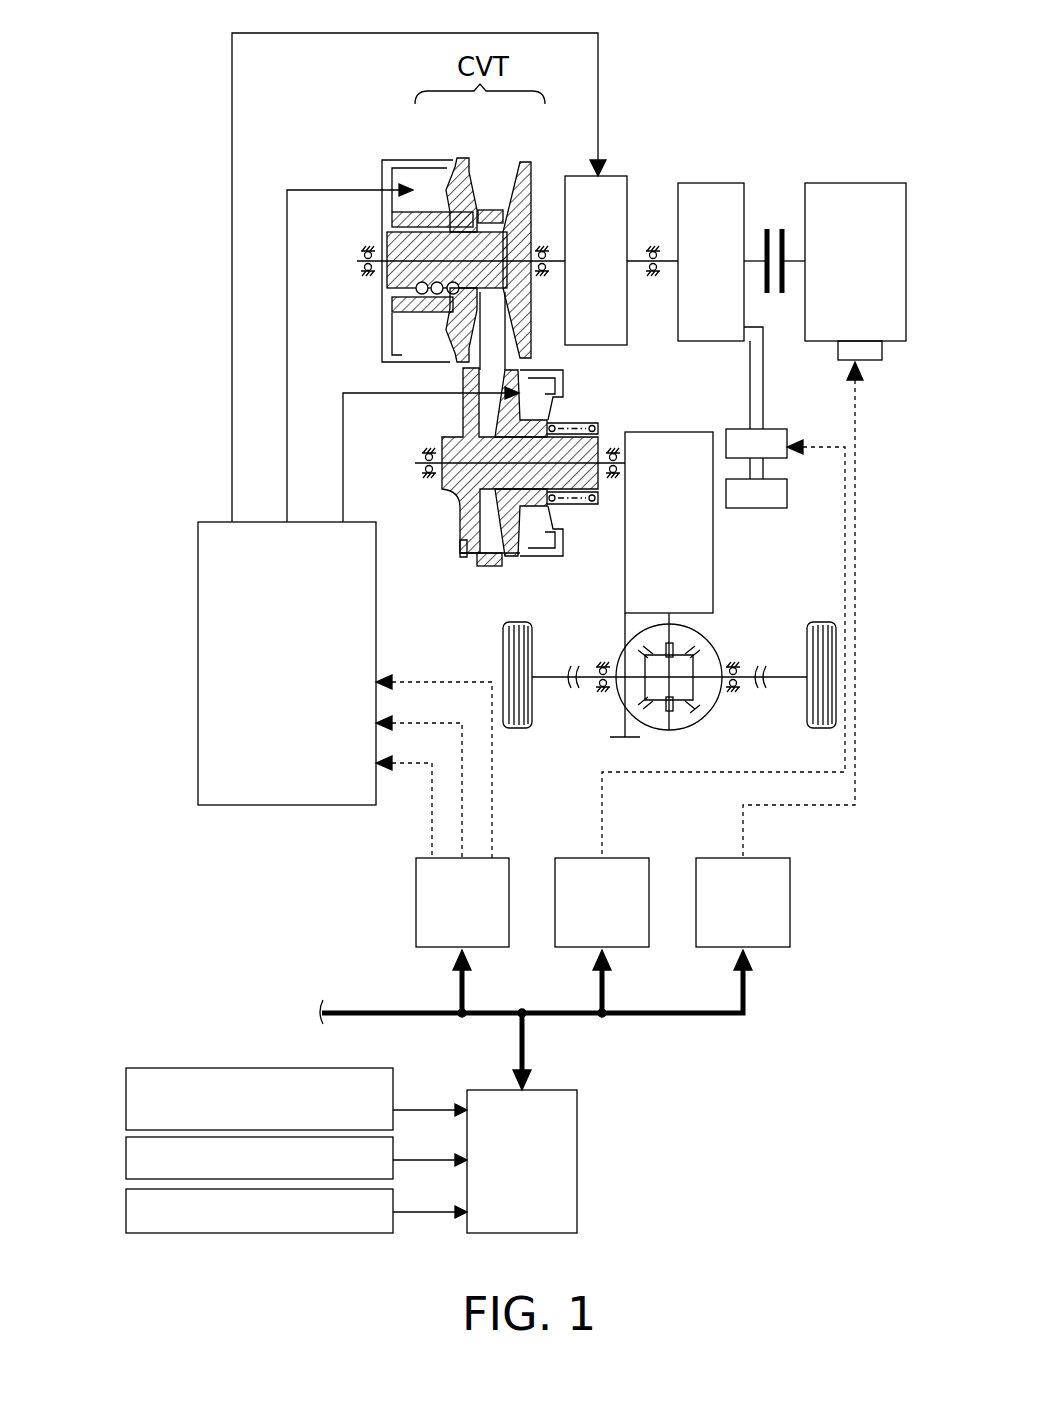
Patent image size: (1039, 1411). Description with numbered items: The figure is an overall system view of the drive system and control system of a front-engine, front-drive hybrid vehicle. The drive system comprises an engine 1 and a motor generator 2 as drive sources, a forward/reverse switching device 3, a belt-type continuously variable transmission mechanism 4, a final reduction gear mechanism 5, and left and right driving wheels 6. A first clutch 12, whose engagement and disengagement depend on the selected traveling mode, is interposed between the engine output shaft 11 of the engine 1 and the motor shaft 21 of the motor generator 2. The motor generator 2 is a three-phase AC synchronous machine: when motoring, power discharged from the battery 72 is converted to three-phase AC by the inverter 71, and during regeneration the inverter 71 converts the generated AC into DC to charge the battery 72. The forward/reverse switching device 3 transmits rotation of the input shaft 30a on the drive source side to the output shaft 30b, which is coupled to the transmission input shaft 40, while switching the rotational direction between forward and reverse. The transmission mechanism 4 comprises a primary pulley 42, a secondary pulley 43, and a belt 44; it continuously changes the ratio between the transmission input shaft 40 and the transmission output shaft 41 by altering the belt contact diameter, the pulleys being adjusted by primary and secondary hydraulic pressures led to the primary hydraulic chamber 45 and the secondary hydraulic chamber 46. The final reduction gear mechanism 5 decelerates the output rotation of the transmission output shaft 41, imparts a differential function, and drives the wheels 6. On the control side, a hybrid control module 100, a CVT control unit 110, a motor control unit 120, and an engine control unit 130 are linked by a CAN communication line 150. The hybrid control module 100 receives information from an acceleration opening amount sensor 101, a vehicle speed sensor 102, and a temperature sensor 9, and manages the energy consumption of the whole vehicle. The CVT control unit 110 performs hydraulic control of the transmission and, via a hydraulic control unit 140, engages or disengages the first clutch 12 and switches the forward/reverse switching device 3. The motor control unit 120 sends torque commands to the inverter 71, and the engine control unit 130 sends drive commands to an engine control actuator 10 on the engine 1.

The engine 1 is at (856, 183).
The motor generator 2 is at (708, 183).
The forward/reverse switching device 3 is at (568, 176).
The belt-type continuously variable transmission mechanism 4 is at (425, 148).
The final reduction gear mechanism 5 is at (690, 432).
The driving wheels 6 is at (534, 720).
The temperature sensor 9 is at (126, 1211).
The engine control actuator 10 is at (880, 360).
The engine output shaft 11 is at (794, 270).
The first clutch 12 is at (775, 229).
The motor shaft 21 is at (668, 270).
The input shaft 30a is at (637, 258).
The output shaft 30b is at (548, 268).
The transmission input shaft 40 is at (392, 243).
The transmission output shaft 41 is at (600, 452).
The primary pulley 42 is at (380, 181).
The secondary pulley 43 is at (460, 527).
The belt 44 is at (490, 374).
The primary hydraulic chamber 45 is at (410, 185).
The secondary hydraulic chamber 46 is at (522, 537).
The inverter 71 is at (795, 431).
The battery 72 is at (784, 508).
The hybrid control module 100 is at (560, 1090).
The acceleration opening amount sensor 101 is at (126, 1096).
The vehicle speed sensor 102 is at (126, 1160).
The CVT control unit 110 is at (430, 947).
The motor control unit 120 is at (568, 947).
The engine control unit 130 is at (708, 947).
The hydraulic control unit 140 is at (198, 548).
The CAN communication line 150 is at (698, 1013).